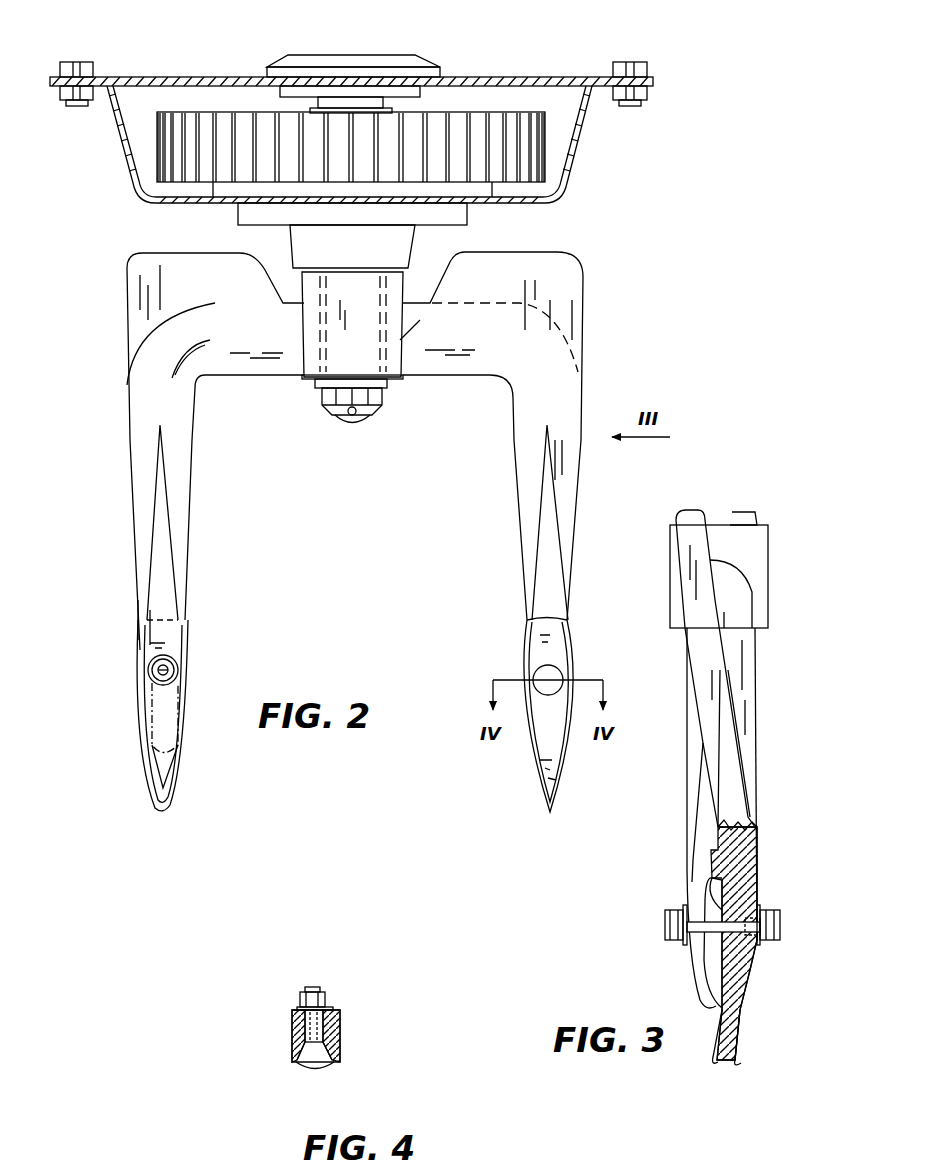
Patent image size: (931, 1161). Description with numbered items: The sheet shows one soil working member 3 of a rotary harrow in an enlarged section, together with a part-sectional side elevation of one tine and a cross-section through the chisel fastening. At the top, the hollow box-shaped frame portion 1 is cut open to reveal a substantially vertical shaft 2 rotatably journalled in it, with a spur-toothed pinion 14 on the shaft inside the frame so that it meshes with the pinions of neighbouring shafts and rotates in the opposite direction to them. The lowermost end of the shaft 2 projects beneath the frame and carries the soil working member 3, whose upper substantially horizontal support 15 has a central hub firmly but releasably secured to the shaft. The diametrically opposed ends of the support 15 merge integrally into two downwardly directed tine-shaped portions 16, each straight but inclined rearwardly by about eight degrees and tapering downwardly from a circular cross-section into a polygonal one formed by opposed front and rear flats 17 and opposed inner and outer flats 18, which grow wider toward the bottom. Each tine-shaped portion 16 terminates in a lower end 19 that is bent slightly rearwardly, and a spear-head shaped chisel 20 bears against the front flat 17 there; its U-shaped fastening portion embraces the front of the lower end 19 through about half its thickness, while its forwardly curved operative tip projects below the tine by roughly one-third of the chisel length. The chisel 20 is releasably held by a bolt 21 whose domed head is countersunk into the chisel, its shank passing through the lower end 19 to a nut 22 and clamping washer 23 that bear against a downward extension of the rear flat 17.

In FIG. 2, the hollow box-shaped frame portion 1 is at (162, 73).
In FIG. 2, the shaft 2 is at (345, 100).
In FIG. 2, the soil working member 3 is at (350, 538).
In FIG. 2, the spur-toothed pinion 14 is at (485, 128).
In FIG. 2, the support 15 is at (410, 328).
In FIG. 3, the support 15 is at (738, 583).
In FIG. 2, the tine-shaped portion 16 is at (188, 497).
In FIG. 3, the tine-shaped portion 16 is at (760, 712).
In FIG. 2, the front and rear flats 17 is at (160, 587).
In FIG. 2, the inner and outer flats 18 is at (573, 510).
In FIG. 3, the inner and outer flats 18 is at (735, 790).
In FIG. 2, the lower end 19 is at (168, 720).
In FIG. 3, the lower end 19 is at (688, 968).
In FIG. 4, the lower end 19 is at (337, 1016).
In FIG. 2, the chisel 20 is at (170, 805).
In FIG. 3, the chisel 20 is at (720, 1020).
In FIG. 4, the chisel 20 is at (293, 1050).
In FIG. 2, the bolt 21 is at (172, 670).
In FIG. 3, the bolt 21 is at (664, 928).
In FIG. 4, the bolt 21 is at (312, 985).
In FIG. 2, the nut 22 is at (172, 660).
In FIG. 3, the nut 22 is at (668, 940).
In FIG. 4, the nut 22 is at (325, 990).
In FIG. 2, the clamping washer 23 is at (175, 676).
In FIG. 3, the clamping washer 23 is at (684, 912).
In FIG. 4, the clamping washer 23 is at (297, 1009).